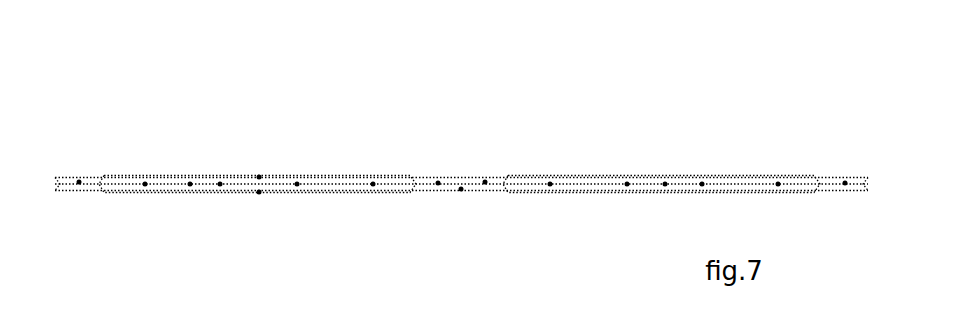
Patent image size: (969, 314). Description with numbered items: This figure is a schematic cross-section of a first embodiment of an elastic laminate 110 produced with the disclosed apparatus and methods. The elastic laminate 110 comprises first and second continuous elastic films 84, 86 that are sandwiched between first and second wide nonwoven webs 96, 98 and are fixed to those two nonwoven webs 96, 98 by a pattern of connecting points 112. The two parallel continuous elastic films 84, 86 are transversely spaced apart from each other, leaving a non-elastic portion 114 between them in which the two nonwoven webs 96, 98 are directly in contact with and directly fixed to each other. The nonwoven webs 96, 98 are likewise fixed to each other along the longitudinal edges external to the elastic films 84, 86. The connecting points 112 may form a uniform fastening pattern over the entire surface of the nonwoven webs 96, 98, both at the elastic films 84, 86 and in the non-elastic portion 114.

The elastic laminate 110 is at (840, 97).
The first continuous elastic film 84 is at (190, 186).
The second continuous elastic film 86 is at (665, 186).
The connecting points 112 is at (220, 184).
The second wide nonwoven web 98 is at (259, 177).
The first wide nonwoven web 96 is at (259, 192).
The non-elastic portion 114 is at (461, 189).